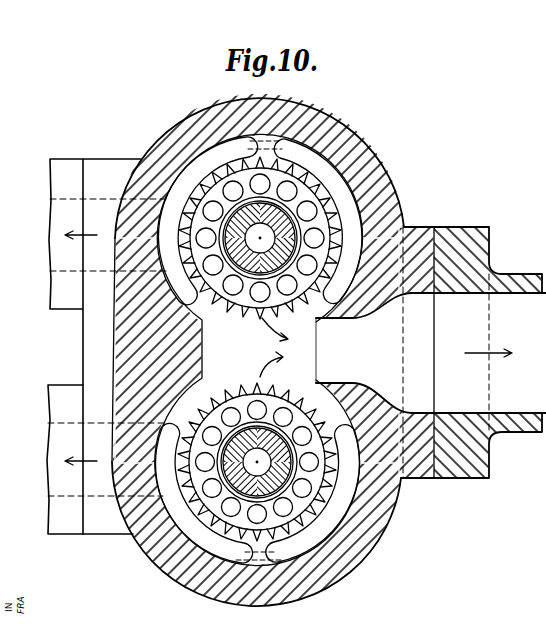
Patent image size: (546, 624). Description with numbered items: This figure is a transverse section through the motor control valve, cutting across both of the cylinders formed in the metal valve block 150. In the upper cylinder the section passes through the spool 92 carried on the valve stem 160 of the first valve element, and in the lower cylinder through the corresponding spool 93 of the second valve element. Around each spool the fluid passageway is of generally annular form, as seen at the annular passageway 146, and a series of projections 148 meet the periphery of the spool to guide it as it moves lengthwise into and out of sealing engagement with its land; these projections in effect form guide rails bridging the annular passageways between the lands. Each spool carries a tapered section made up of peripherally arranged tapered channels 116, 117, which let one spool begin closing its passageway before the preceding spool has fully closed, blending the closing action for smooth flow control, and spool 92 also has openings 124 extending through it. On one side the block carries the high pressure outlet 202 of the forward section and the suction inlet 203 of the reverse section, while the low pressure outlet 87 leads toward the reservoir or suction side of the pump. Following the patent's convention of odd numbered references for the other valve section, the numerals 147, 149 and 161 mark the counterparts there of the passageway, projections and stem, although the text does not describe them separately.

The low pressure outlet 87 is at (468, 344).
The spool 92 is at (323, 187).
The spool 93 is at (323, 514).
The tapered channels 116 is at (236, 182).
The tapered channels 117 is at (323, 500).
The openings 124 is at (318, 236).
The annular passageway 146 is at (197, 170).
The lower housing lobe 147 is at (192, 525).
The projections 148 is at (326, 297).
The lower arcuate seal segments 149 is at (258, 542).
The valve block 150 is at (316, 113).
The valve stem 160 is at (249, 262).
The lower shaft 161 is at (250, 440).
The high pressure outlet 202 is at (68, 200).
The suction inlet 203 is at (68, 424).